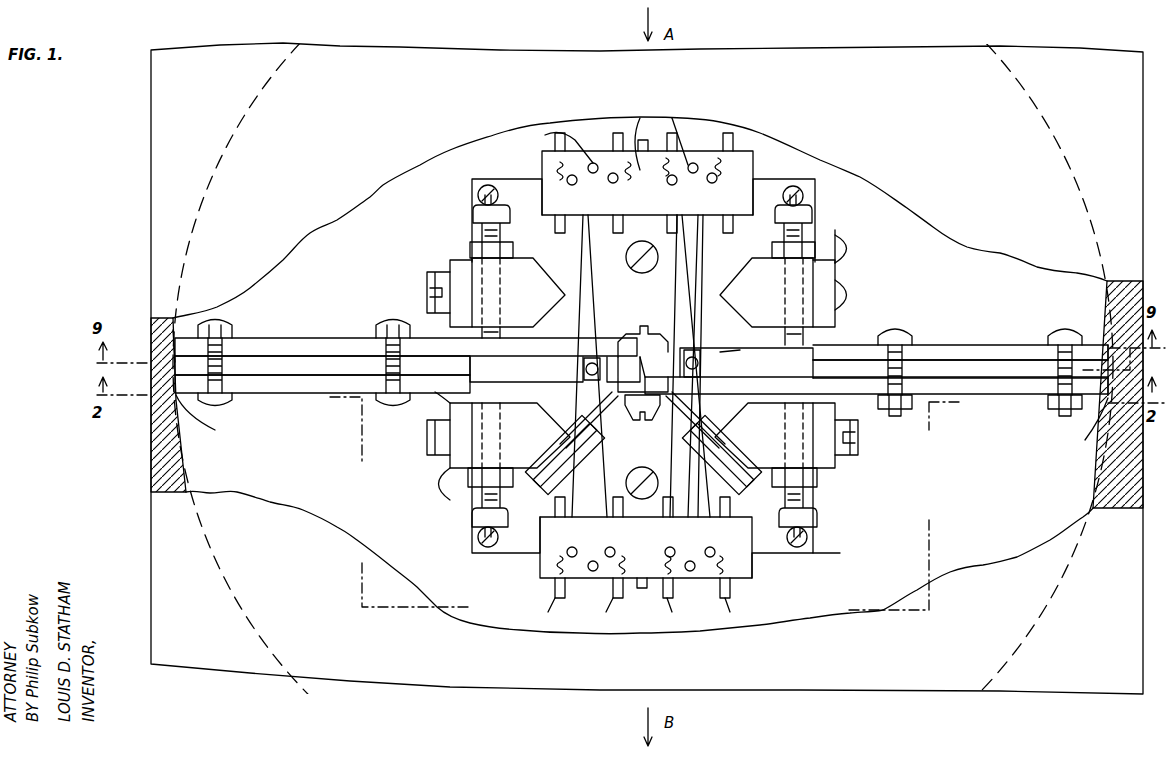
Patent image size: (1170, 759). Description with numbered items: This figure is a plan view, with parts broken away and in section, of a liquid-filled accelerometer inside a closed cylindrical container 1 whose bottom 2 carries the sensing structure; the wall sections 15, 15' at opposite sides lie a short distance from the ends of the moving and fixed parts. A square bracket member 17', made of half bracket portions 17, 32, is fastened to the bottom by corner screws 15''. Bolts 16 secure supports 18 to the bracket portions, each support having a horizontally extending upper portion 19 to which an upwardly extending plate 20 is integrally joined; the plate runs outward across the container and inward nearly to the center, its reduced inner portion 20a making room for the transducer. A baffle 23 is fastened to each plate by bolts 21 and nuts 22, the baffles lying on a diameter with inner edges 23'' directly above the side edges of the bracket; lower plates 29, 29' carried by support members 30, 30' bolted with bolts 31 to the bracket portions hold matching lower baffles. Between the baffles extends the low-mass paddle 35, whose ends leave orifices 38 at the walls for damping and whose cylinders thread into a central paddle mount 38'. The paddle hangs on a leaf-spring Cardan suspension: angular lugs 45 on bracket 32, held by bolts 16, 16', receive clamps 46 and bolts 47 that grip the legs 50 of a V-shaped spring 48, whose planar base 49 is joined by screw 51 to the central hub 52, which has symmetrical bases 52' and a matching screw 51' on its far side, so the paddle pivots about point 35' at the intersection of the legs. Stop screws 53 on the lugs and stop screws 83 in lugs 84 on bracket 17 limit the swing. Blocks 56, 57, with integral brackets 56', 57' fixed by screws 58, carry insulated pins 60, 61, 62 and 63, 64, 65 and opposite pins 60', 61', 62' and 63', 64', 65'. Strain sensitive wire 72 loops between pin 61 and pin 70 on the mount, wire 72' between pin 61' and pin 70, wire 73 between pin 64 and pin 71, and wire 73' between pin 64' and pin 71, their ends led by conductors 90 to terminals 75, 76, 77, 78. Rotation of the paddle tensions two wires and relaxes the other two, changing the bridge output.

The container 1 is at (160, 333).
The bottom 2 is at (640, 375).
The container wall section 15 is at (145, 346).
The container wall section 15' is at (1090, 355).
The screw 15'' is at (641, 355).
The bolt 16 is at (638, 362).
The bolt 16' is at (641, 345).
The half bracket portion 17 is at (643, 210).
The square bracket member 17' is at (606, 523).
The support 18 is at (450, 268).
The horizontally extending upper portion 19 is at (450, 322).
The plate 20 is at (292, 345).
The inner portion of plate 20a is at (566, 343).
The bolt 21 is at (215, 400).
The nut 22 is at (232, 328).
The baffle 23 is at (598, 345).
The inner edge of baffle 23'' is at (746, 363).
The plate 29 is at (641, 396).
The plate 29' is at (960, 347).
The support member 30 is at (437, 405).
The support member 30' is at (840, 326).
The bolt 31 is at (450, 478).
The half bracket portion 32 is at (818, 554).
The paddle 35 is at (555, 369).
The paddle pivot point 35' is at (626, 314).
The orifice 38 is at (642, 422).
The paddle mount 38' is at (726, 323).
The lug 45 is at (740, 486).
The clamp 46 is at (558, 455).
The bolt 47 is at (548, 482).
The V-shaped spring 48 is at (538, 450).
The planar base 49 is at (638, 374).
The leg 50 is at (572, 420).
The screw 51 is at (649, 417).
The screw 51' is at (659, 309).
The central hub 52 is at (646, 332).
The symmetrical base 52' is at (619, 418).
The limit motion stop screw 53 is at (471, 518).
The block 56 is at (637, 365).
The bracket 56' is at (641, 210).
The block 57 is at (634, 360).
The bracket 57' is at (634, 521).
The screw 58 is at (634, 270).
The pin 60 is at (561, 192).
The pin 60' is at (561, 539).
The pin 61 is at (584, 150).
The pin 61' is at (585, 583).
The pin 62 is at (605, 141).
The pin 62' is at (628, 557).
The pin 63 is at (661, 170).
The pin 63' is at (657, 544).
The pin 64 is at (691, 148).
The pin 64' is at (697, 585).
The pin 65 is at (711, 157).
The pin 65' is at (724, 545).
The pin 70 is at (702, 363).
The pin 71 is at (582, 370).
The strain sensitive wire 72 is at (703, 374).
The strain wire 72' is at (619, 458).
The strain wire 73 is at (714, 366).
The strain wire 73' is at (572, 366).
The terminal 75 is at (545, 135).
The terminal 76 is at (674, 132).
The terminal 77 is at (572, 611).
The terminal 78 is at (710, 611).
The motion limiting stop screw 83 is at (472, 216).
The lug 84 is at (642, 293).
The conductor 90 is at (636, 604).